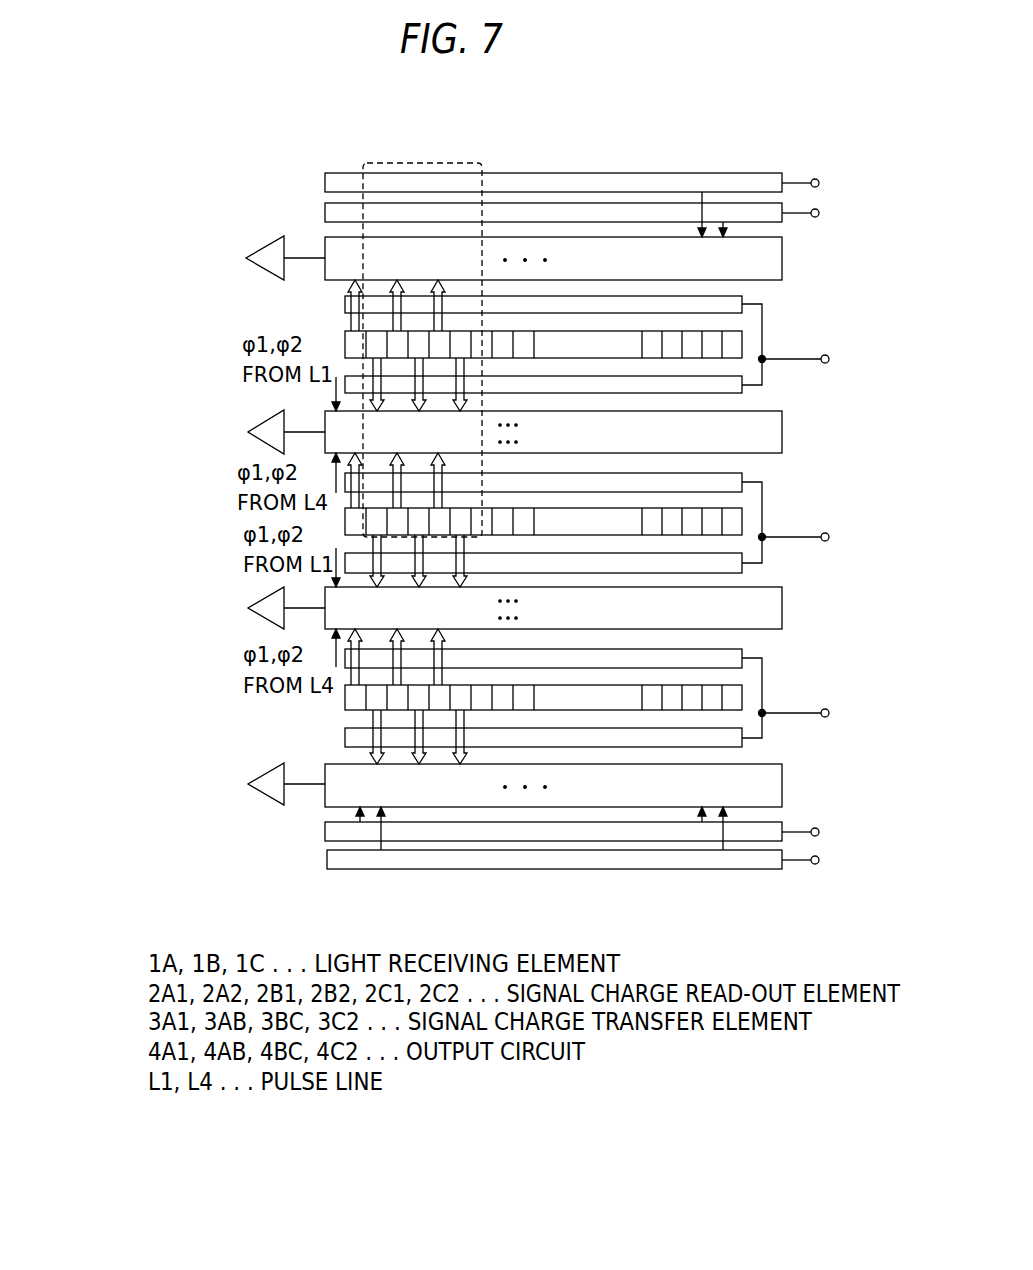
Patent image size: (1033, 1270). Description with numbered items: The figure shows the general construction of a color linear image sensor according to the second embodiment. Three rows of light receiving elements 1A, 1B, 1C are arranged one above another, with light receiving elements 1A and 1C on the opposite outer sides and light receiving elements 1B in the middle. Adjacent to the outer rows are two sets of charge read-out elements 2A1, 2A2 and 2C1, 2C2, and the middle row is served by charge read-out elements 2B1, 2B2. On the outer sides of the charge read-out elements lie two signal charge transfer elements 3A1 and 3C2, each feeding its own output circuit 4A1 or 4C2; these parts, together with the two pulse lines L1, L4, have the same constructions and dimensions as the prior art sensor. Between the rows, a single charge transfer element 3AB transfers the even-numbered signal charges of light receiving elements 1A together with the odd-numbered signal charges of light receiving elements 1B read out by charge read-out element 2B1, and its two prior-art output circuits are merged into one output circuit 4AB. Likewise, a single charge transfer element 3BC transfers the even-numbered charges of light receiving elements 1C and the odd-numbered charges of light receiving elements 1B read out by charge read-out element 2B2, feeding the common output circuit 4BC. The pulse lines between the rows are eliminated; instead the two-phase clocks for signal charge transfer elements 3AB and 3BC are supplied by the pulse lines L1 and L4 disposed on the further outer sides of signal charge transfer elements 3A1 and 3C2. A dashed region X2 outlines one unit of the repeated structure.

The light receiving elements 1A is at (735, 341).
The light receiving elements 1B is at (735, 518).
The light receiving elements 1C is at (735, 694).
The charge read-out element 2A1 is at (742, 296).
The charge read-out element 2A2 is at (742, 390).
The charge read-out element 2B1 is at (742, 473).
The charge read-out element 2B2 is at (742, 570).
The charge read-out element 2C1 is at (742, 649).
The charge read-out element 2C2 is at (742, 745).
The signal charge transfer element 3A1 is at (770, 258).
The charge transfer element 3AB is at (775, 437).
The charge transfer element 3BC is at (782, 600).
The signal charge transfer element 3C2 is at (770, 786).
The output circuit 4A1 is at (268, 250).
The output circuit 4AB is at (262, 428).
The output circuit 4BC is at (262, 604).
The output circuit 4C2 is at (270, 778).
The pulse line L1 is at (860, 176).
The pulse line L4 is at (860, 825).
The unit region X2 is at (480, 163).